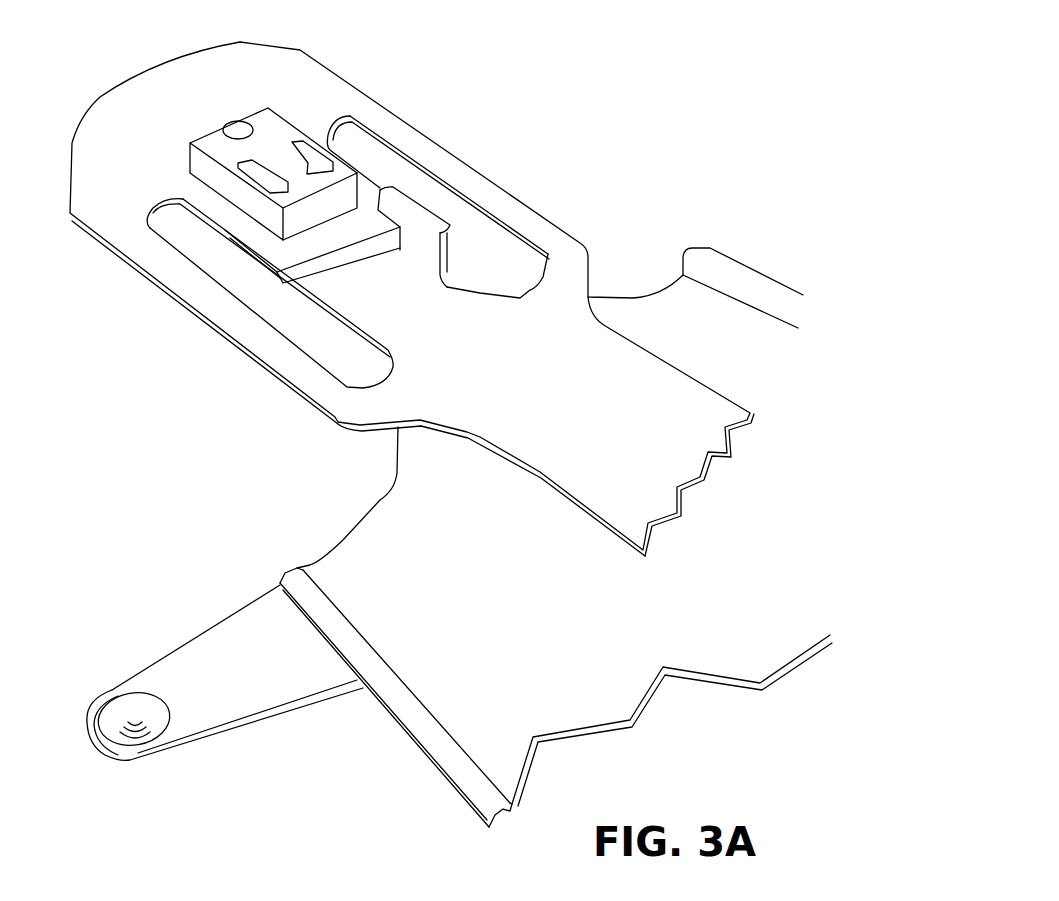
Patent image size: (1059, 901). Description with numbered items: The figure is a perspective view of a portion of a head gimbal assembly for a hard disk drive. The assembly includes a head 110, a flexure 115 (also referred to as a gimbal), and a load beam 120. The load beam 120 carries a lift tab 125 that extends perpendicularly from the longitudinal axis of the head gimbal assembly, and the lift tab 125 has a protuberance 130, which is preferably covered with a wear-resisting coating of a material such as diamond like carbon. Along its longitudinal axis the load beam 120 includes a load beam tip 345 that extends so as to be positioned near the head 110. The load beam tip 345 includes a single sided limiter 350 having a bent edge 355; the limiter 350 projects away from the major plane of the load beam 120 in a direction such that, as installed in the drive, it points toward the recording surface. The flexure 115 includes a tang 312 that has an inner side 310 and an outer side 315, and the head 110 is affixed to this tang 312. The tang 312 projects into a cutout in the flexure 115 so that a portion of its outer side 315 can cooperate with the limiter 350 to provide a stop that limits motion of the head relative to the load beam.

The head 110 is at (277, 128).
The flexure 115 is at (162, 100).
The load beam 120 is at (603, 630).
The lift tab 125 is at (230, 627).
The protuberance 130 is at (113, 707).
The inner side 310 is at (268, 248).
The tang 312 is at (276, 262).
The outer side 315 is at (369, 200).
The load beam tip 345 is at (337, 306).
The single sided limiter 350 is at (427, 242).
The bent edge 355 is at (427, 213).